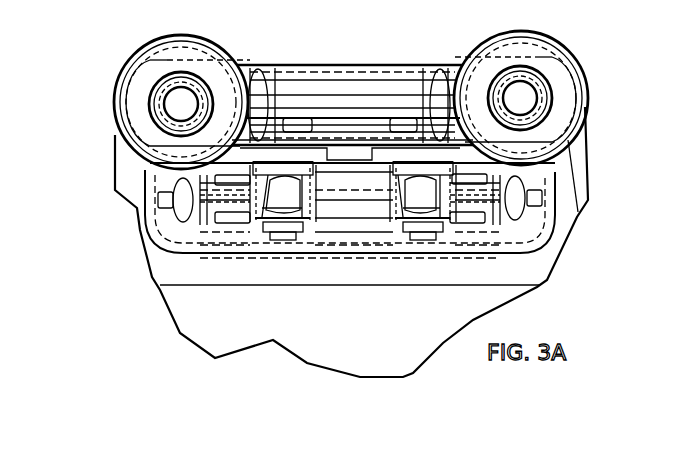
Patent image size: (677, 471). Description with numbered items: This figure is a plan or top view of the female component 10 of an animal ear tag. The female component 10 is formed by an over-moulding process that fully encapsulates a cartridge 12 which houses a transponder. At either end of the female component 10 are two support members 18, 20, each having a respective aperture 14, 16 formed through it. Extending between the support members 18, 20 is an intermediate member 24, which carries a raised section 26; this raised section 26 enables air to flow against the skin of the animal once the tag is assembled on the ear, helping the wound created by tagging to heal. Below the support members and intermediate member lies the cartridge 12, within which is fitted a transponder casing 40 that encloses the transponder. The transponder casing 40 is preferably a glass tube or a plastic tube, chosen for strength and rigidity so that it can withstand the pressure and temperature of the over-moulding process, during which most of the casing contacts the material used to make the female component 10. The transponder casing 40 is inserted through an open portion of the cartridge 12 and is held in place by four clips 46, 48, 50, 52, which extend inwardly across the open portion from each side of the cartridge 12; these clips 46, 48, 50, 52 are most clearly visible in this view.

The female component 10 is at (128, 196).
The cartridge 12 is at (457, 224).
The aperture 14 is at (182, 104).
The aperture 16 is at (523, 98).
The support member 18 is at (121, 78).
The support member 20 is at (580, 54).
The intermediate member 24 is at (297, 66).
The raised section 26 is at (361, 99).
The transponder casing 40 is at (487, 204).
The clip 46 is at (256, 226).
The clip 48 is at (305, 226).
The clip 50 is at (447, 226).
The clip 52 is at (393, 222).